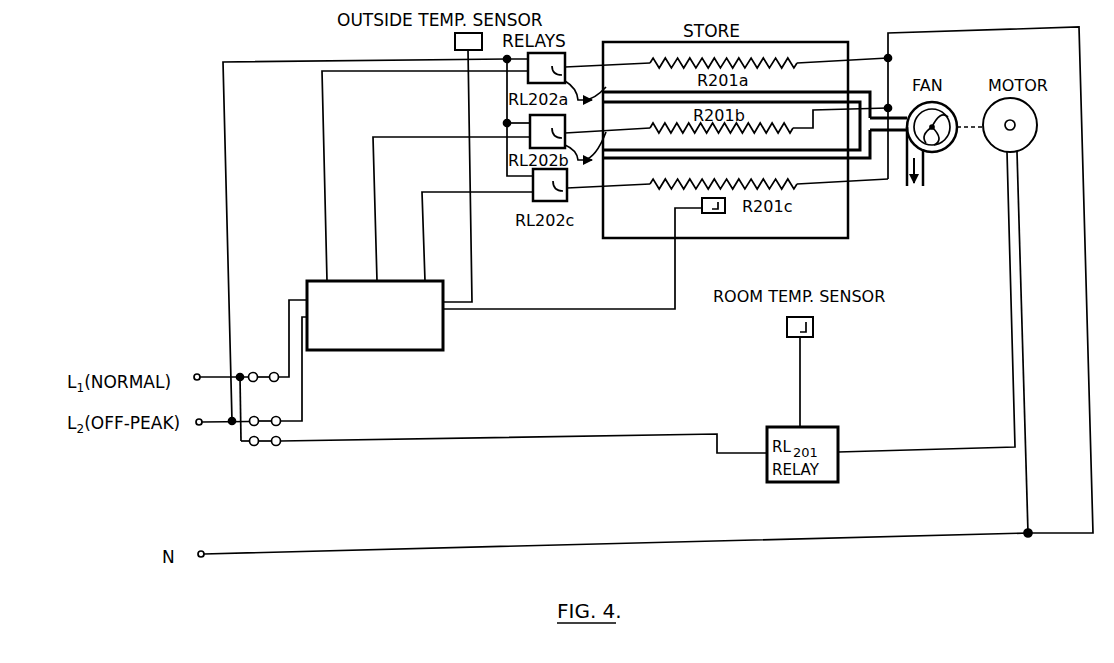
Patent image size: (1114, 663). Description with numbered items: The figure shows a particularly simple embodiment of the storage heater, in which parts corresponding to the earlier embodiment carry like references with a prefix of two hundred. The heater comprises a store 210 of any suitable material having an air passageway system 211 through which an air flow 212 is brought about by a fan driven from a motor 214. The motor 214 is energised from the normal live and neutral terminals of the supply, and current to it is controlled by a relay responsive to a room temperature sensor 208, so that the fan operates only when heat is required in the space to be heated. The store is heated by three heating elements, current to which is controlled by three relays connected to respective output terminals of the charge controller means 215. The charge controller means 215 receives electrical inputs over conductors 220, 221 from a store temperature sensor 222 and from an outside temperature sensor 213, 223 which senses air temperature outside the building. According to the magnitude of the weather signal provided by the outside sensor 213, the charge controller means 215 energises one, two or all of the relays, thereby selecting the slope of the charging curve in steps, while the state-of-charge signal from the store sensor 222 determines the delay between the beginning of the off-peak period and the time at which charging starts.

The room temperature sensor 208 is at (813, 329).
The store 210 is at (827, 97).
The air passageway system 211 is at (828, 167).
The air flow 212 is at (919, 191).
The outside temperature sensor 213 is at (455, 41).
The motor 214 is at (1025, 147).
The charge controller means 215 is at (369, 281).
The conductor 220 is at (658, 311).
The conductor 221 is at (473, 282).
The store temperature sensor 222 is at (712, 214).
The outside air temperature sensor 223 is at (606, 93).